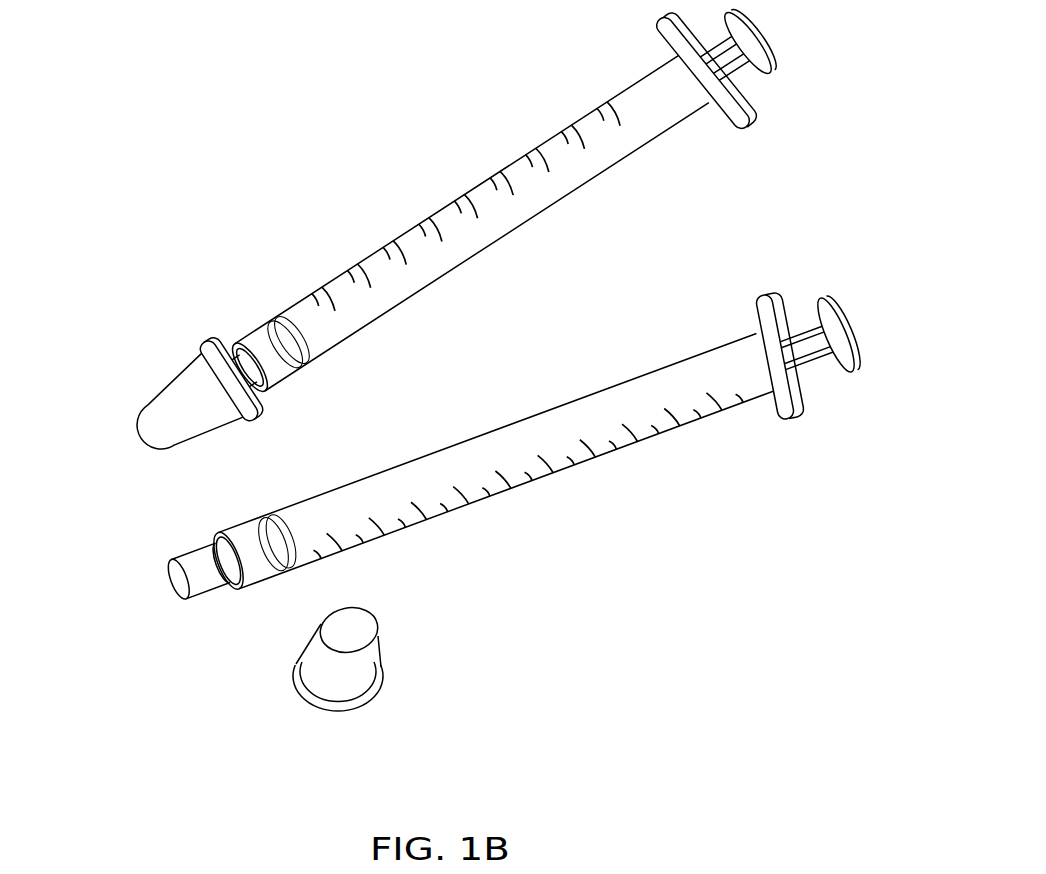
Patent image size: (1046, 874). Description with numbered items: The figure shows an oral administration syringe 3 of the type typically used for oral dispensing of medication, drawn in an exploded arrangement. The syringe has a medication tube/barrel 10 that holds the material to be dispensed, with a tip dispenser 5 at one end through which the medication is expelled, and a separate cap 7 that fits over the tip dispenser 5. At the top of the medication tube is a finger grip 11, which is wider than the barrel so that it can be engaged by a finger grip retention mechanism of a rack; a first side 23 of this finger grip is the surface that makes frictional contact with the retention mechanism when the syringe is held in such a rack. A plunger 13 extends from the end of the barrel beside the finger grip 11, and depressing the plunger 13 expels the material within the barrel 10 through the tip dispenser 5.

The oral administration syringe 3 is at (494, 240).
The first side of the finger grip 23 is at (730, 87).
The plunger 13 is at (847, 317).
The finger grip 11 is at (793, 393).
The medication tube/barrel 10 is at (495, 467).
The tip dispenser 5 is at (197, 560).
The cap 7 is at (325, 686).